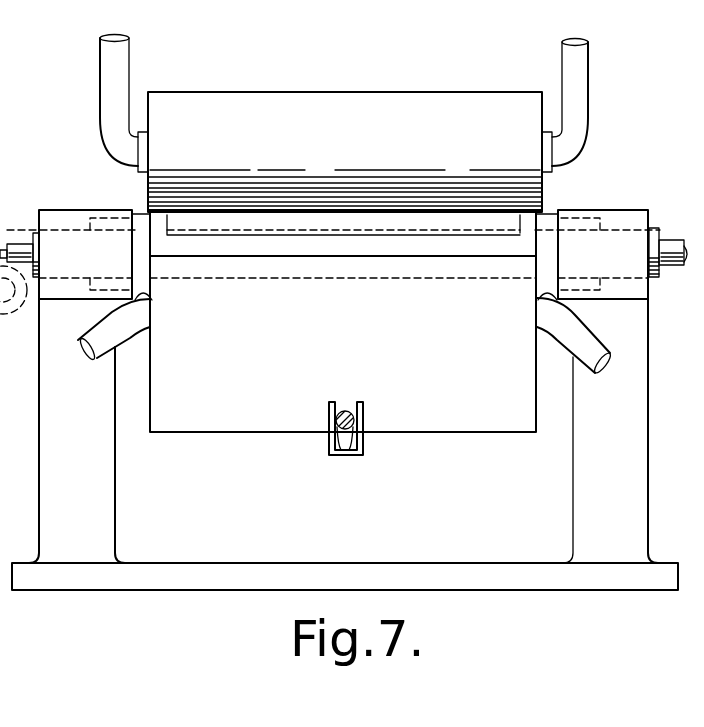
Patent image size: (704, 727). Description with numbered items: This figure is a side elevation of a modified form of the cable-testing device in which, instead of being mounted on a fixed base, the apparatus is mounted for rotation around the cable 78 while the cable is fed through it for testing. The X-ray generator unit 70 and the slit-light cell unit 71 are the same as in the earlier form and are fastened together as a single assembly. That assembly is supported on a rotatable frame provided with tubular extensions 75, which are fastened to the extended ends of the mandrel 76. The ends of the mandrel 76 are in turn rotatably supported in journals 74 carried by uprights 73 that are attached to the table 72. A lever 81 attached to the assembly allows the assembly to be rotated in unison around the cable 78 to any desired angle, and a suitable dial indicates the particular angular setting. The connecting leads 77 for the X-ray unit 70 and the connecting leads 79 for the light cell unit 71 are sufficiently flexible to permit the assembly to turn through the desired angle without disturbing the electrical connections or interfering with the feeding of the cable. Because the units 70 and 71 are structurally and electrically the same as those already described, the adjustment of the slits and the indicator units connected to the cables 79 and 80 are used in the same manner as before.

The X-ray generator unit 70 is at (309, 89).
The slit-light cell unit 71 is at (442, 415).
The table 72 is at (163, 575).
The uprights 73 is at (98, 486).
The journals 74 is at (63, 216).
The tubular extensions 75 is at (143, 259).
The mandrel 76 is at (656, 228).
The connecting leads 77 is at (121, 53).
The cable 78 is at (662, 239).
The connecting leads 79 is at (97, 340).
The cable 80 is at (577, 338).
The lever 81 is at (354, 421).